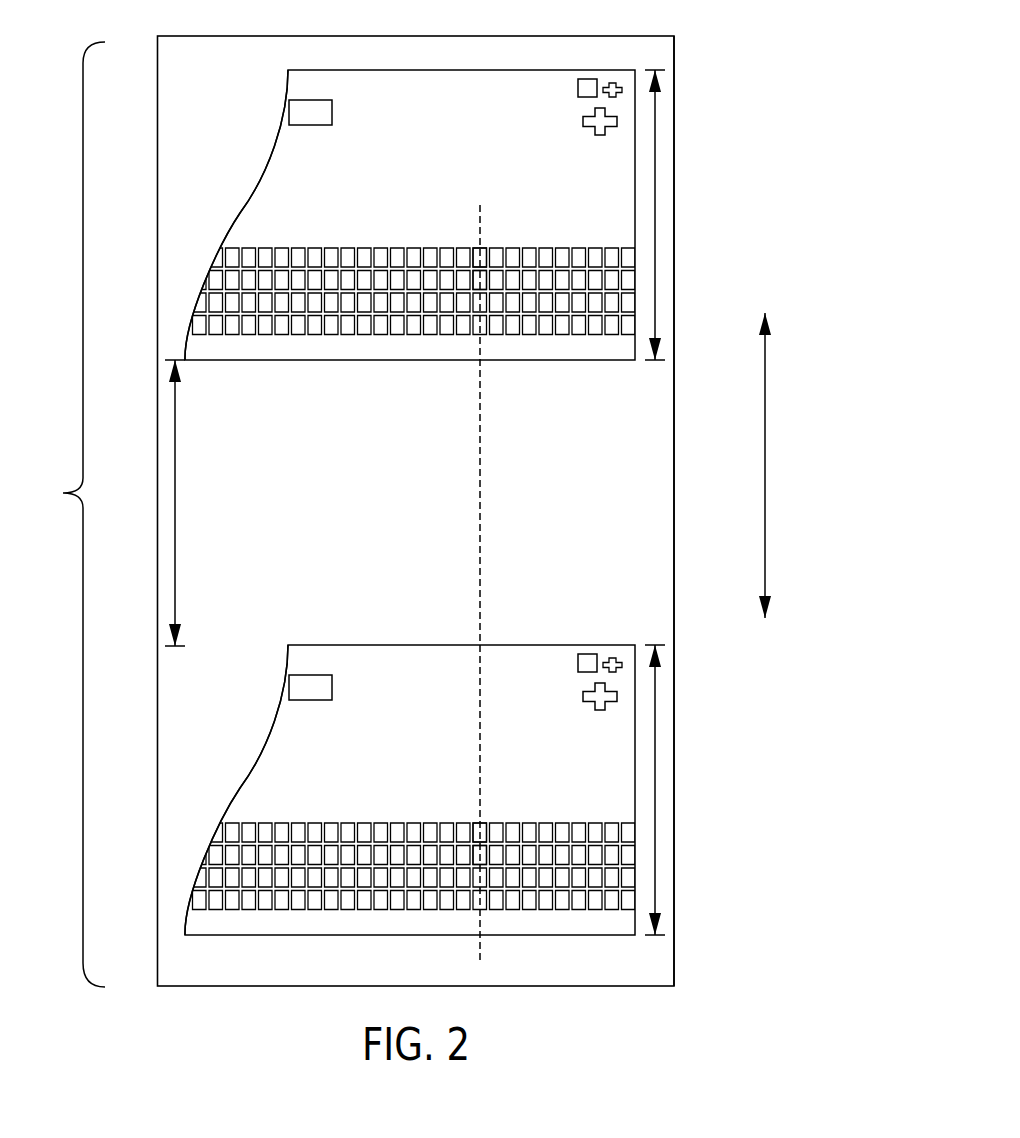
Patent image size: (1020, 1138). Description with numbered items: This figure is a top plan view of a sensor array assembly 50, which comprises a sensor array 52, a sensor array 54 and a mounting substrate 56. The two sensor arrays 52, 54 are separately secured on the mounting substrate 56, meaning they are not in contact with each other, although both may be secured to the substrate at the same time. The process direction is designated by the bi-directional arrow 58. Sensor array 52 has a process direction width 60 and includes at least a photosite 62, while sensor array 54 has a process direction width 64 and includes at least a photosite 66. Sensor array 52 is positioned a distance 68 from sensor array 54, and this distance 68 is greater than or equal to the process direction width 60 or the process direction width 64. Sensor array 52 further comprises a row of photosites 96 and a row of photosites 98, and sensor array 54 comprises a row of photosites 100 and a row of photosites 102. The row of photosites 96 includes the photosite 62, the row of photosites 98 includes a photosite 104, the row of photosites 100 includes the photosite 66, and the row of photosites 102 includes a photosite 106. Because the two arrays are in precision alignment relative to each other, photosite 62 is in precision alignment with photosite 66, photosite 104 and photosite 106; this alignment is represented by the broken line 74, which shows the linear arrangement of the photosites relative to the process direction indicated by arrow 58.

The sensor array assembly 50 is at (64, 493).
The sensor array 52 is at (215, 117).
The sensor array 54 is at (213, 693).
The mounting substrate 56 is at (675, 380).
The bi-directional arrow 58 is at (765, 453).
The process direction width 60 is at (655, 180).
The photosite 62 is at (480, 270).
The process direction width 64 is at (657, 757).
The photosite 66 is at (480, 837).
The distance 68 is at (175, 500).
The broken line 74 is at (480, 473).
The row of photosites 96 is at (212, 250).
The row of photosites 98 is at (200, 277).
The row of photosites 100 is at (213, 825).
The row of photosites 102 is at (198, 857).
The photosite 104 is at (480, 267).
The photosite 106 is at (480, 850).